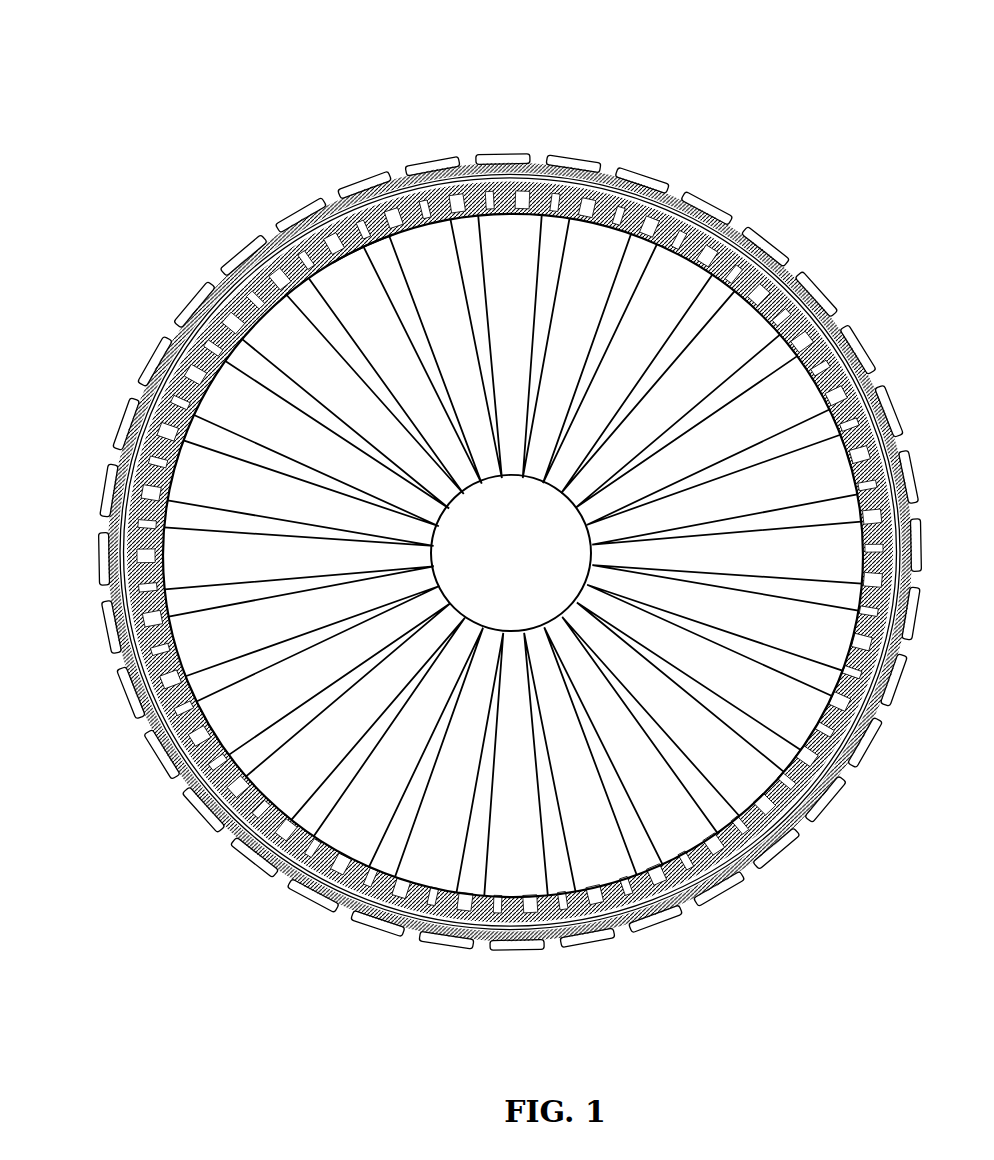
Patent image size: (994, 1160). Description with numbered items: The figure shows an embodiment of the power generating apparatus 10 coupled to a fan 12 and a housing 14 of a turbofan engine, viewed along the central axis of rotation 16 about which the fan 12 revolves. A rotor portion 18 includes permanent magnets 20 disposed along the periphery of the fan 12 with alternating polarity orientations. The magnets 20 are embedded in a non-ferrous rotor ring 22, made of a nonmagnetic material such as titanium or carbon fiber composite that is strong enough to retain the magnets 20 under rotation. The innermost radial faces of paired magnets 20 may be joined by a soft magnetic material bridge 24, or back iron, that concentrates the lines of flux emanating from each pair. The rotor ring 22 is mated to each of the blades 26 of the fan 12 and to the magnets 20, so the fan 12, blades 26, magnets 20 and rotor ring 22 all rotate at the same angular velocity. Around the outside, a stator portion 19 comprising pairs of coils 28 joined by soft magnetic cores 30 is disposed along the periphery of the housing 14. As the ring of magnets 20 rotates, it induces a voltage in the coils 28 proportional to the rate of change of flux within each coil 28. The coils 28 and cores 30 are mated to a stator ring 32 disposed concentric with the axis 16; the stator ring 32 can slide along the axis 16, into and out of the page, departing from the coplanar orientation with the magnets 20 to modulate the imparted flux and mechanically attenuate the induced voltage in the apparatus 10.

The power generating apparatus 10 is at (589, 230).
The fan 12 is at (685, 287).
The housing 14 is at (407, 190).
The central axis of rotation 16 is at (519, 557).
The rotor portion 18 is at (146, 478).
The stator portion 19 is at (130, 381).
The permanent magnets 20 is at (268, 280).
The rotor ring 22 is at (337, 233).
The soft magnetic material bridge 24 is at (370, 237).
The blades 26 is at (753, 320).
The coils 28 is at (490, 168).
The soft magnetic cores 30 is at (483, 157).
The stator ring 32 is at (793, 405).